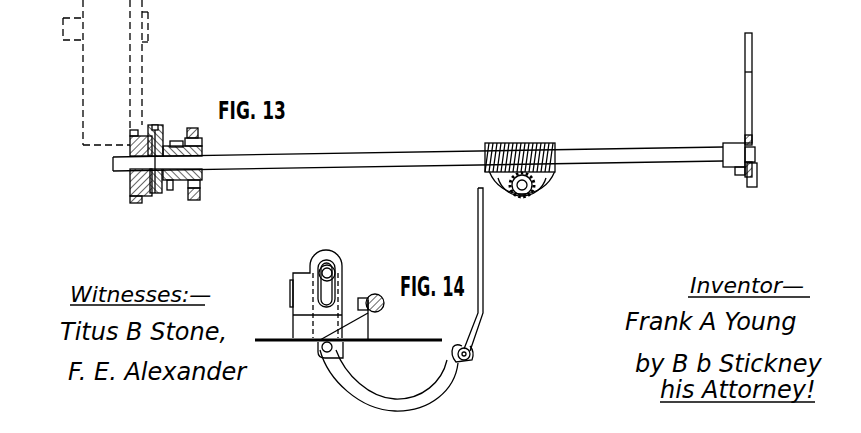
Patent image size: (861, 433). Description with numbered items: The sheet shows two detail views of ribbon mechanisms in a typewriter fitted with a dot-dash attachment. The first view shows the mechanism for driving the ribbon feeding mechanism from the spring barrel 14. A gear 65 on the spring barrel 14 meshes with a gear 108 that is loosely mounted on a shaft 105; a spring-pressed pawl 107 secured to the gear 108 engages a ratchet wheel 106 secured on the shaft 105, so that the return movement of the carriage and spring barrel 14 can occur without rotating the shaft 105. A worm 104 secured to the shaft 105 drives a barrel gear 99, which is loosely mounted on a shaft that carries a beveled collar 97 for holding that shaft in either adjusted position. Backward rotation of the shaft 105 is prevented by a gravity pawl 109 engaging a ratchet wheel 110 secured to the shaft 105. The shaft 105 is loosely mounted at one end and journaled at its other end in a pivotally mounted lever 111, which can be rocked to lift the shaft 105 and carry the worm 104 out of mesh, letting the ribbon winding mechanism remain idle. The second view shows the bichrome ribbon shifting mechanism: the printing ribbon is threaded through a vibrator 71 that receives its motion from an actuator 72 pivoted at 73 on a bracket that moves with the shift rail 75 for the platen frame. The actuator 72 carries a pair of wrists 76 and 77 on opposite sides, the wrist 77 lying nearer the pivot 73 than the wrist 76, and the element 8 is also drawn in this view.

In FIG. 13, the spring barrel 14 is at (83, 116).
In FIG. 13, the gear 65 is at (142, 60).
In FIG. 13, the shaft 105 is at (354, 155).
In FIG. 13, the worm 104 is at (535, 143).
In FIG. 13, the barrel gear 99 is at (534, 187).
In FIG. 13, the beveled collar 97 is at (535, 214).
In FIG. 13, the spring-pressed pawl 107 is at (157, 136).
In FIG. 13, the gear 108 is at (138, 200).
In FIG. 13, the ratchet wheel 106 is at (158, 194).
In FIG. 13, the gravity pawl 109 is at (203, 127).
In FIG. 13, the ratchet wheel 110 is at (202, 180).
In FIG. 13, the lever 111 is at (752, 85).
In FIG. 14, the bar 8 is at (422, 338).
In FIG. 14, the vibrator 71 is at (483, 270).
In FIG. 14, the actuator 72 is at (392, 398).
In FIG. 14, the pivot 73 is at (320, 348).
In FIG. 14, the shift rail 75 is at (373, 294).
In FIG. 14, the wrist 76 is at (315, 275).
In FIG. 14, the wrist 77 is at (340, 283).